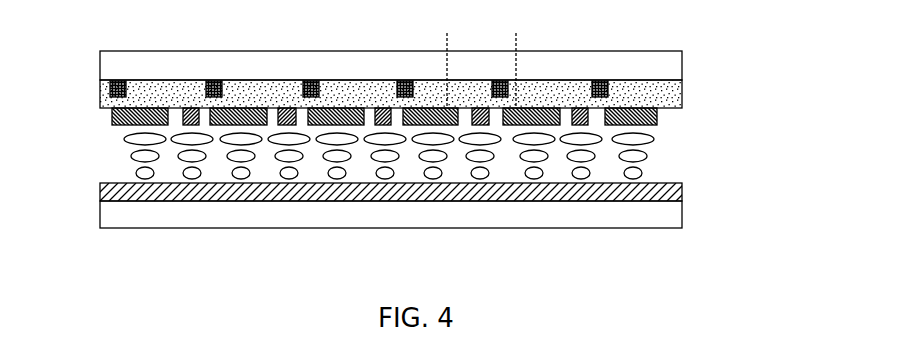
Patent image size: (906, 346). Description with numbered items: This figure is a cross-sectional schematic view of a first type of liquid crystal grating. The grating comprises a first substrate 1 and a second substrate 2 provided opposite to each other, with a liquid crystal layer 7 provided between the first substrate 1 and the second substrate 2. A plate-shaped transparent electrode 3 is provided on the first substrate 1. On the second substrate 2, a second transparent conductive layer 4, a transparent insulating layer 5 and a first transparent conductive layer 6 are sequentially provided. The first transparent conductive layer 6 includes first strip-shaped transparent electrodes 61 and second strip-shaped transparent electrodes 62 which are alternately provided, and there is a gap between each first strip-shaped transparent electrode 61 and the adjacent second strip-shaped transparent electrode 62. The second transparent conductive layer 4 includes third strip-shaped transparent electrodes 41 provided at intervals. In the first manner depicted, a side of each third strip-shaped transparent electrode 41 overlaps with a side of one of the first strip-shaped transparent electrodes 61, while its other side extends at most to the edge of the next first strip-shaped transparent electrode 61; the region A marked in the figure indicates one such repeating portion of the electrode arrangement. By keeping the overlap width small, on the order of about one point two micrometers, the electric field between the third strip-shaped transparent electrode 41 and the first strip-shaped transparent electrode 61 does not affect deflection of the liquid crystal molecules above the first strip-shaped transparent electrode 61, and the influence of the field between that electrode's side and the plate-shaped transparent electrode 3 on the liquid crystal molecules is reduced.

The first substrate 1 is at (100, 215).
The second substrate 2 is at (100, 65).
The plate-shaped transparent electrode 3 is at (100, 188).
The second transparent conductive layer 4 is at (399, 83).
The third strip-shaped transparent electrode 41 is at (606, 91).
The transparent insulating layer 5 is at (100, 95).
The first transparent conductive layer 6 is at (440, 134).
The first strip-shaped transparent electrode 61 is at (658, 115).
The second strip-shaped transparent electrode 62 is at (587, 122).
The liquid crystal layer 7 is at (132, 153).
The region A is at (516, 33).